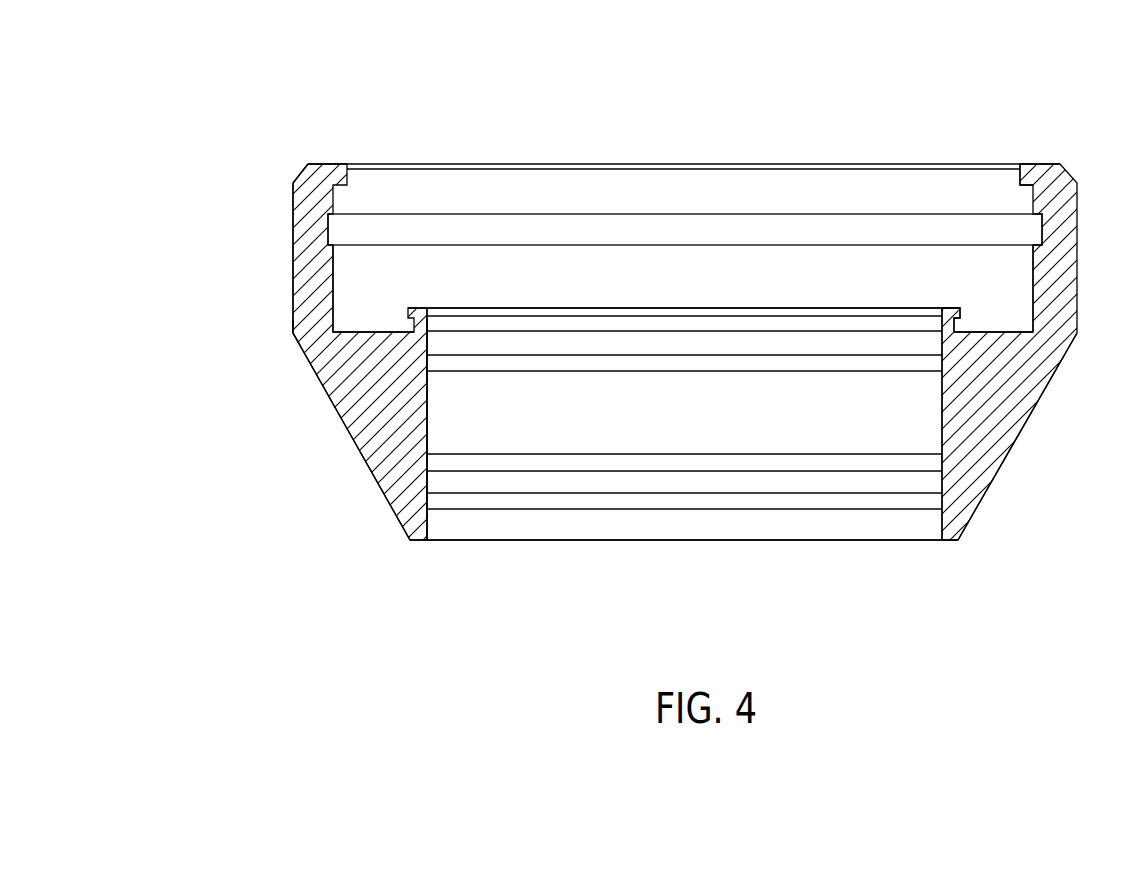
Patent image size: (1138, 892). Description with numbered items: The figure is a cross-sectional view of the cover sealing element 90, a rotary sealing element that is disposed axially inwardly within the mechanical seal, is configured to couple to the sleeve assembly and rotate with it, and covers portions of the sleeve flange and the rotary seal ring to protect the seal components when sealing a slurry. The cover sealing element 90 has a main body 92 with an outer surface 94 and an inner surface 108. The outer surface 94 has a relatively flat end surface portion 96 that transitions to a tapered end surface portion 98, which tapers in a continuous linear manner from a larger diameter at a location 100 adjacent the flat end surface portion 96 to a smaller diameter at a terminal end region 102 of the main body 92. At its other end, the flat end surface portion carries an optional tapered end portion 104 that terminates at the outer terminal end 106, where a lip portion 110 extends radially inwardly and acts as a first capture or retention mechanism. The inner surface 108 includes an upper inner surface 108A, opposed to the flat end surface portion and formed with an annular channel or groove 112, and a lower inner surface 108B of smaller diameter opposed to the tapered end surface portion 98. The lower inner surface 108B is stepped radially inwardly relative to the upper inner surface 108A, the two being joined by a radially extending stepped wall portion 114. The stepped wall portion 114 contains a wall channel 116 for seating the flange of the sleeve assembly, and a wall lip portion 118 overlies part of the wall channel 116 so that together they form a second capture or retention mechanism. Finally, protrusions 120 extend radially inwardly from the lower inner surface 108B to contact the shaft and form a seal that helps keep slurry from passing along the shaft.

The cover sealing element 90 is at (826, 97).
The main body 92 is at (569, 355).
The outer surface 94 is at (292, 310).
The flat end surface portion 96 is at (283, 265).
The tapered end surface portion 98 is at (332, 413).
The location 100 is at (292, 333).
The terminal end region 102 is at (402, 556).
The tapered end portion 104 is at (303, 176).
The outer terminal end 106 is at (323, 155).
The inner surface 108 is at (722, 412).
The upper inner surface 108A is at (336, 292).
The lower inner surface 108B is at (428, 418).
The lip portion 110 is at (1020, 180).
The annular channel or groove 112 is at (1026, 228).
The stepped wall portion 114 is at (978, 287).
The wall channel 116 is at (985, 323).
The wall lip portion 118 is at (943, 312).
The protrusions 120 is at (427, 457).